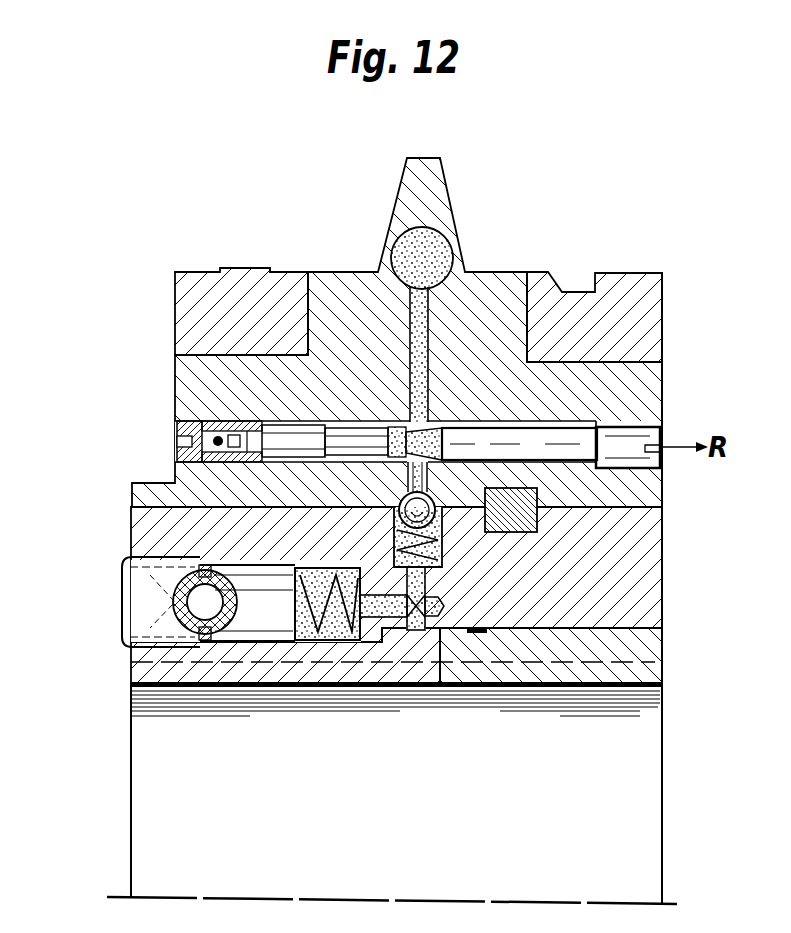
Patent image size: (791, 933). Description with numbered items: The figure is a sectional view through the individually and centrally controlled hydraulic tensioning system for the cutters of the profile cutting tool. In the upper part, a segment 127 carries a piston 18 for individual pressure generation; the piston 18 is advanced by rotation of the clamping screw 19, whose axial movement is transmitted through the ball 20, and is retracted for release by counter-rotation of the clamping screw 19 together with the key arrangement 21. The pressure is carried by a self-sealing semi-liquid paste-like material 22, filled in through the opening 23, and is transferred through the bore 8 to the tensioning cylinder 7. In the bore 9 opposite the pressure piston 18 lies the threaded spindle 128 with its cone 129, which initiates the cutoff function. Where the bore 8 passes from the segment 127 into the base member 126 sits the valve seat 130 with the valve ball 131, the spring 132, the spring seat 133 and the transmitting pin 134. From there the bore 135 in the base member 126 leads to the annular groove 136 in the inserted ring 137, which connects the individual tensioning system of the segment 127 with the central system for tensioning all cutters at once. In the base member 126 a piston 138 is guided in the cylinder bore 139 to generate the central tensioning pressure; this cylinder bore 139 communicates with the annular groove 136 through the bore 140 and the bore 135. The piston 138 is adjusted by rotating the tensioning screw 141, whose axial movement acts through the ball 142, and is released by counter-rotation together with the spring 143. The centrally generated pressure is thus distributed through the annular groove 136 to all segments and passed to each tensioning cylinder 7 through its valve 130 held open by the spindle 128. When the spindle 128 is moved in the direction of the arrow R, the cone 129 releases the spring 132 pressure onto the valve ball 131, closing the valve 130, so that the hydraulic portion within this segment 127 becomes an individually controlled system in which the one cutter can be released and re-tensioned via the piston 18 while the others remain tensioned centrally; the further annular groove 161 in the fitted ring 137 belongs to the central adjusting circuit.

The tensioning cylinder 7 is at (392, 240).
The bore 8 is at (430, 345).
The bore 9 is at (337, 425).
The piston 18 is at (348, 440).
The clamping screw 19 is at (178, 432).
The ball 20 is at (202, 423).
The key arrangement 21 is at (245, 421).
The self-sealing semi-liquid paste-like material 22 is at (397, 428).
The opening 23 is at (406, 478).
The base member 126 is at (636, 610).
The segment 127 is at (645, 395).
The threaded spindle 128 is at (530, 440).
The cone 129 is at (410, 428).
The valve seat 130 is at (448, 500).
The valve ball 131 is at (408, 514).
The spring 132 is at (430, 565).
The spring seat 133 is at (395, 566).
The transmitting pin 134 is at (432, 487).
The bore 135 is at (428, 584).
The annular groove 136 is at (430, 638).
The inserted ring 137 is at (650, 665).
The piston 138 is at (268, 577).
The cylinder bore 139 is at (300, 645).
The bore 140 is at (372, 625).
The tensioning screw 141 is at (172, 580).
The ball 142 is at (130, 647).
The spring 143 is at (318, 642).
The annular groove 161 is at (485, 636).